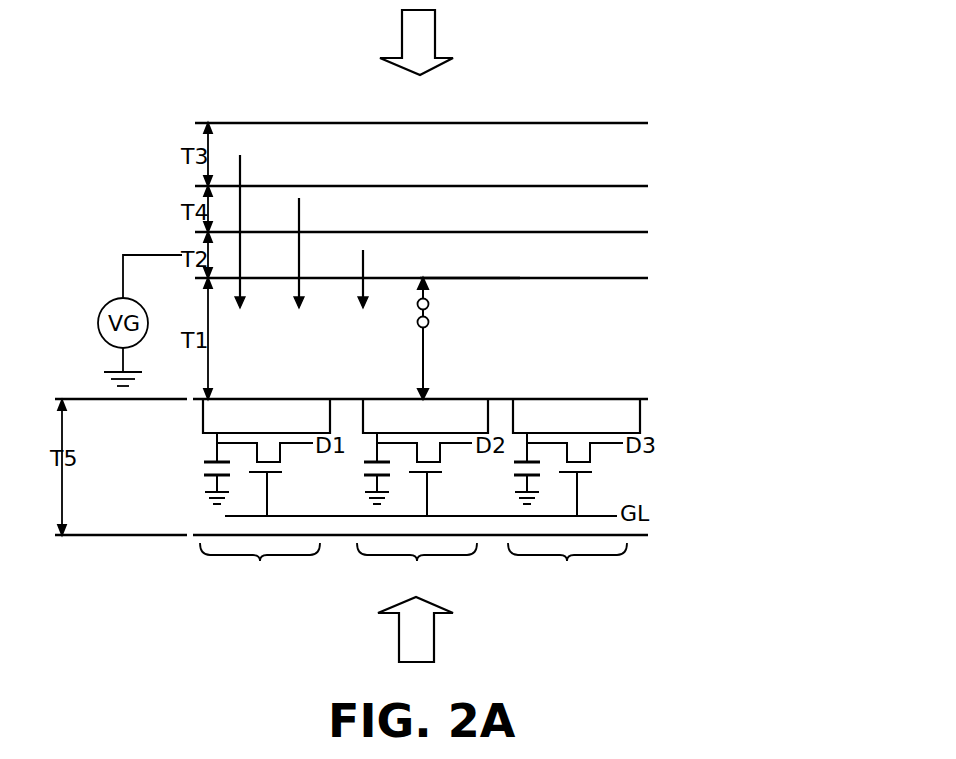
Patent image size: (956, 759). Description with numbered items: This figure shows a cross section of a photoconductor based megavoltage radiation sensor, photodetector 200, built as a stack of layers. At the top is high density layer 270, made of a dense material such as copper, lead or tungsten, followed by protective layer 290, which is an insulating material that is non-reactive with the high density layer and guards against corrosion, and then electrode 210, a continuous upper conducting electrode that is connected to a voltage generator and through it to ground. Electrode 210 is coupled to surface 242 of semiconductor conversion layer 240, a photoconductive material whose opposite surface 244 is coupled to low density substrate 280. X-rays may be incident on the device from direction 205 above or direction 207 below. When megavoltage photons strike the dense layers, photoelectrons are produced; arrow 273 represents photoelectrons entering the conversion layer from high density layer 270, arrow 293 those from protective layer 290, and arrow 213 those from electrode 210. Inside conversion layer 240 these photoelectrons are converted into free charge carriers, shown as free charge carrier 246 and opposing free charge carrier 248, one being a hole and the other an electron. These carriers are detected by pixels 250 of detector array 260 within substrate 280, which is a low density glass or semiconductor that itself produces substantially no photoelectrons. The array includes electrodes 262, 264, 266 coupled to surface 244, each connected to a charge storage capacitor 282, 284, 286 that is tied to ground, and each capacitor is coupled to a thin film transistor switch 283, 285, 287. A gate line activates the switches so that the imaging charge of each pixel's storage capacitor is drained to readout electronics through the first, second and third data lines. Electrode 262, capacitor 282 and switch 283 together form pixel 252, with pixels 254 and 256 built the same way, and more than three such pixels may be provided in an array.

The photodetector 200 is at (632, 66).
The direction 205 is at (435, 37).
The direction 207 is at (434, 630).
The electrode 210 is at (633, 253).
The arrow 213 is at (363, 262).
The semiconductor conversion layer 240 is at (632, 343).
The surface 242 is at (517, 279).
The surface 244 is at (500, 399).
The free charge carrier 246 is at (429, 304).
The opposing free charge carrier 248 is at (429, 323).
The pixels 250 is at (183, 431).
The pixel 252 is at (260, 569).
The pixel 254 is at (417, 569).
The pixel 256 is at (567, 569).
The detector array 260 is at (655, 416).
The electrode 262 is at (284, 428).
The electrode 264 is at (442, 428).
The electrode 266 is at (595, 428).
The high density layer 270 is at (633, 158).
The arrow 273 is at (240, 165).
The low density substrate 280 is at (653, 450).
The thin film transistor capacitor 282 is at (203, 470).
The thin film transistor switch 283 is at (246, 473).
The thin film transistor capacitor 284 is at (364, 470).
The thin film transistor switch 285 is at (406, 473).
The thin film transistor capacitor 286 is at (514, 470).
The thin film transistor switch 287 is at (556, 473).
The protective layer 290 is at (633, 210).
The arrow 293 is at (299, 210).